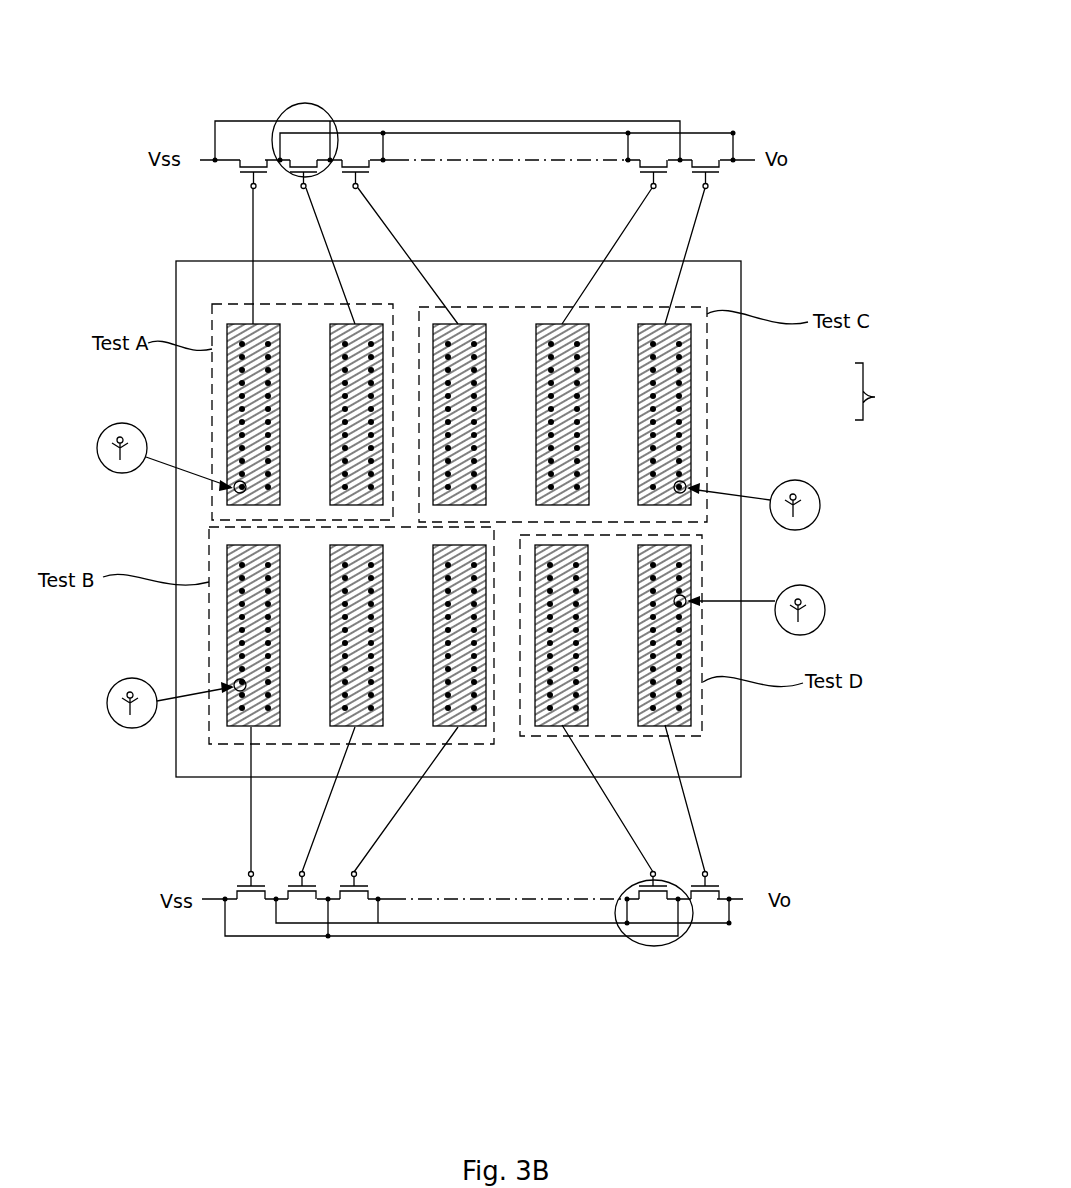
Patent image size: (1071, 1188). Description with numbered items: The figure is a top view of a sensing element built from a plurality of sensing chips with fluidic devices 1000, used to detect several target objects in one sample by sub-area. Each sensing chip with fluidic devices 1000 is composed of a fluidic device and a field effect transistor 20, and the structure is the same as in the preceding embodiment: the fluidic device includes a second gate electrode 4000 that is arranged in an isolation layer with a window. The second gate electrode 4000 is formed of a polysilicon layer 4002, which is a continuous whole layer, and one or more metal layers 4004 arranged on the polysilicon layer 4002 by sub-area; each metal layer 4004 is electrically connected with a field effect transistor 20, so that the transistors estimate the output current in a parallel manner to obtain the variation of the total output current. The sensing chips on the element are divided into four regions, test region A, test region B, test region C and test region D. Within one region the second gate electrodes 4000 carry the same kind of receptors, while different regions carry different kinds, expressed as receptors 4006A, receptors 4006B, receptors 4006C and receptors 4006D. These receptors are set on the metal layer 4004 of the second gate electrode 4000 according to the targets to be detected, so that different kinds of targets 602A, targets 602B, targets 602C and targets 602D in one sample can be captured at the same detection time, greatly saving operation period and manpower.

The sensing chip with fluidic devices 1000 is at (731, 63).
The field effect transistor 20 is at (330, 104).
The polysilicon layer 4002 is at (705, 360).
The metal layer 4004 is at (680, 413).
The second gate electrode 4000 is at (891, 391).
The targets 602A is at (120, 434).
The targets 602B is at (130, 689).
The targets 602C is at (795, 491).
The targets 602D is at (800, 596).
The receptors 4006A is at (110, 458).
The receptors 4006B is at (118, 712).
The receptors 4006C is at (798, 517).
The receptors 4006D is at (802, 619).